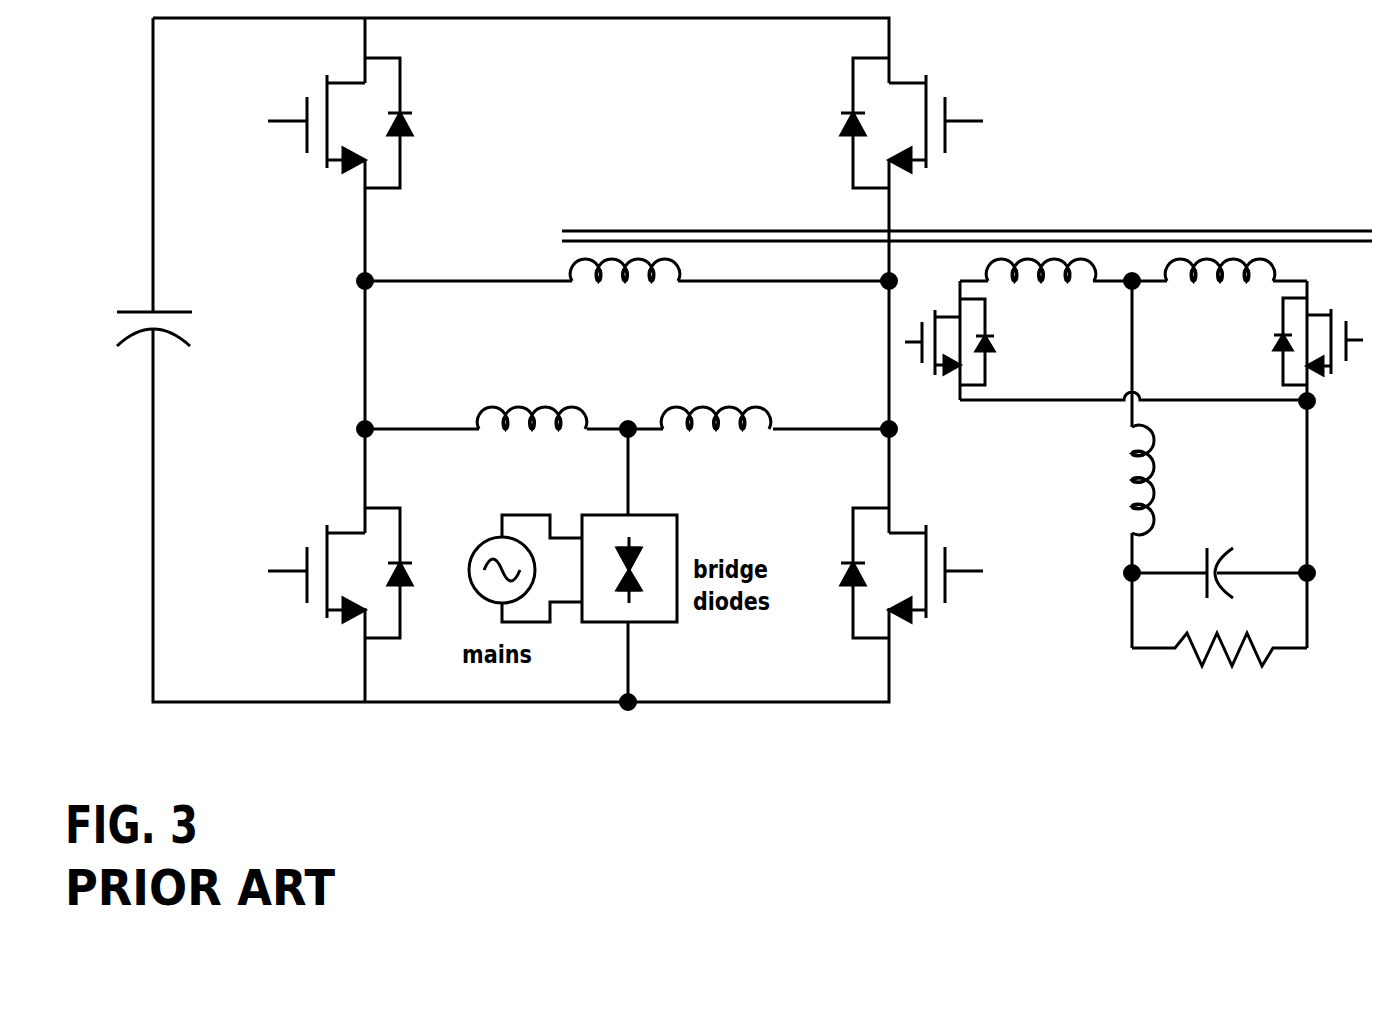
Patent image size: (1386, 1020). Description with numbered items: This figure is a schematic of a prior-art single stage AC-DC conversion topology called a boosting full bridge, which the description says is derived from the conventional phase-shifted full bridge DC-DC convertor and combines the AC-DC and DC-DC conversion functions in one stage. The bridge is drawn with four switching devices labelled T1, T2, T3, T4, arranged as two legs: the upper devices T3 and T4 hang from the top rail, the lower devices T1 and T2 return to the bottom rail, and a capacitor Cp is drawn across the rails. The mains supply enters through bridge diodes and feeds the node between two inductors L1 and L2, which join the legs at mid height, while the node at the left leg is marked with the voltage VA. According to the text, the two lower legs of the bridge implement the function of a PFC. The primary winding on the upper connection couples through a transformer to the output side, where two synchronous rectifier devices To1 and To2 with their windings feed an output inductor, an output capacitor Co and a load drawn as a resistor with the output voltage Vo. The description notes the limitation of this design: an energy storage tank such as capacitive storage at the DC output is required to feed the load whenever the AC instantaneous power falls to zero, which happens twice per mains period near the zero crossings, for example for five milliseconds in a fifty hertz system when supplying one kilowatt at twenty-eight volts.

The transistor T1 is at (340, 572).
The transistor T2 is at (912, 568).
The transistor T3 is at (340, 117).
The transistor T4 is at (912, 117).
The primary capacitor Cp is at (161, 303).
The node voltage VA is at (384, 301).
The inductor L1 is at (496, 403).
The inductor L2 is at (758, 403).
The output transistor To1 is at (1247, 330).
The output transistor To2 is at (1018, 329).
The output capacitor Co is at (1219, 556).
The output voltage / load Vo is at (1219, 668).